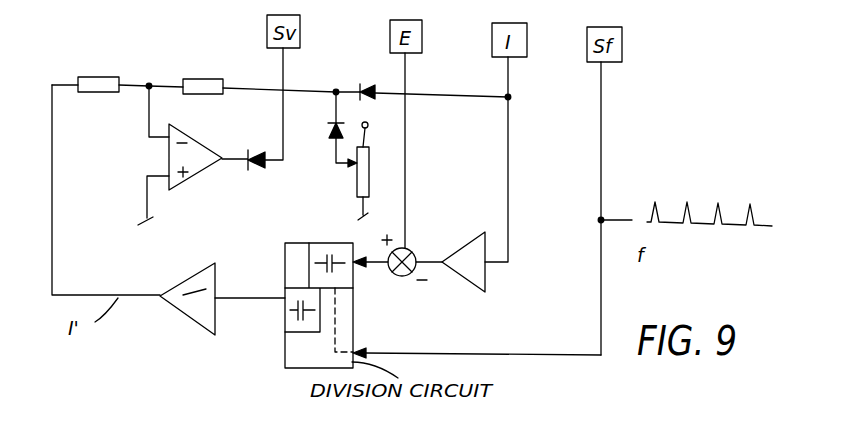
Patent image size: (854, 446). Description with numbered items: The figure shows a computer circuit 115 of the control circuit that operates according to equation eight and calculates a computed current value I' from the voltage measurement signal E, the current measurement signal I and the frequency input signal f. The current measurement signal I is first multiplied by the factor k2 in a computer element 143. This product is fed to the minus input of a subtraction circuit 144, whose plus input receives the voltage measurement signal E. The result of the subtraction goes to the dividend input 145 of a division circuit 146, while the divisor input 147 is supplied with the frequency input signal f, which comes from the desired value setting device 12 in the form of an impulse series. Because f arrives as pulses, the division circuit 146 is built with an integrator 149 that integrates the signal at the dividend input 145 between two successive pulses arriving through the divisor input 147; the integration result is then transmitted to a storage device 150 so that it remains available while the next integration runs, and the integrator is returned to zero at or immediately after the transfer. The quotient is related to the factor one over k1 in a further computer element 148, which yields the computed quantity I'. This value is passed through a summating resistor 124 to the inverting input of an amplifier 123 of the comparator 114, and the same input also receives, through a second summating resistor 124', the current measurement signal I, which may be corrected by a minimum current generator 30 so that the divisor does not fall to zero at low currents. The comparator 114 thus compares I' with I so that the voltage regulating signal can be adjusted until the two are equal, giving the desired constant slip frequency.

The summating resistor 124 is at (99, 64).
The summating resistor 124' is at (207, 65).
The comparator 114 is at (134, 169).
The amplifier 123 is at (205, 172).
The minimum current generator 30 is at (320, 167).
The integrator 149 is at (319, 242).
The storage device 150 is at (284, 320).
The division circuit 146 is at (285, 368).
The subtraction circuit 144 is at (406, 277).
The computer circuit 115 is at (424, 208).
The dividend input 145 is at (380, 266).
The computer element 143 is at (463, 285).
The computer element 148 is at (193, 323).
The divisor input 147 is at (456, 356).
The desired value setting device 12 is at (682, 183).